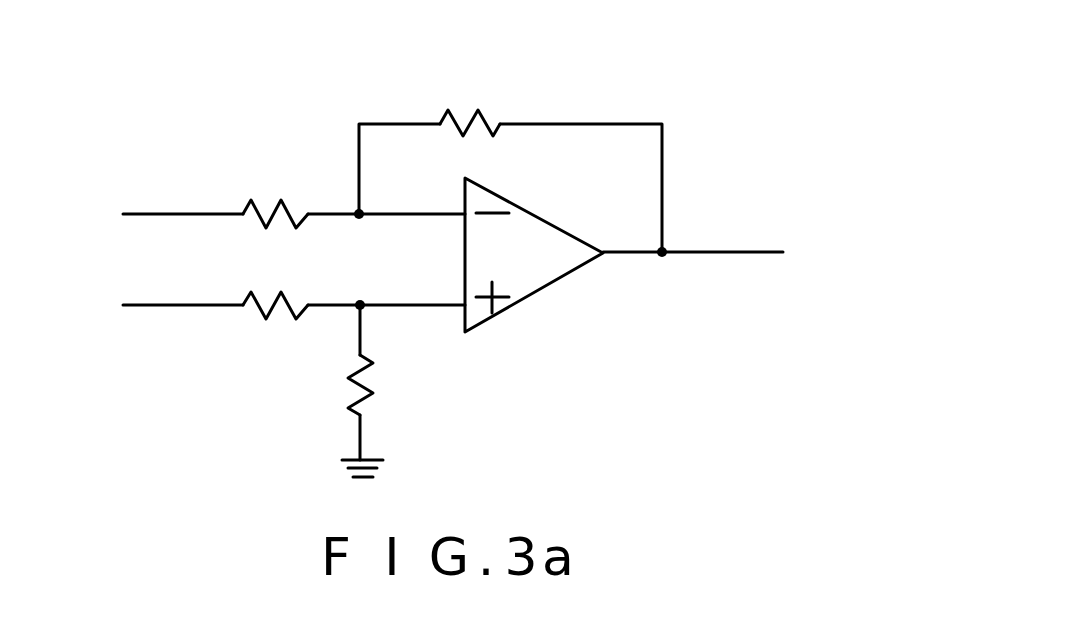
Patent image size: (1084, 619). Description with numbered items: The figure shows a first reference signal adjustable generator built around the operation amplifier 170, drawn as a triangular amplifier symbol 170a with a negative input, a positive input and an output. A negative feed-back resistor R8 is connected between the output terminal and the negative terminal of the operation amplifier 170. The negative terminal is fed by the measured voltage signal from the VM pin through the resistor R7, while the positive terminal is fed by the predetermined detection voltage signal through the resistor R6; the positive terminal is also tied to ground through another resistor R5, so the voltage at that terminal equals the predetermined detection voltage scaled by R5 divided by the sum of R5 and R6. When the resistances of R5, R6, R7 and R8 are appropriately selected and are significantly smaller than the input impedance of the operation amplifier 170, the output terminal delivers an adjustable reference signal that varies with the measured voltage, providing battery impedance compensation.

The operation amplifier 170 is at (475, 238).
The operational amplifier OP170 170a is at (550, 288).
The resistor R5 is at (386, 385).
The resistor R6 is at (275, 325).
The resistor R7 is at (275, 230).
The negative feed-back resistor R8 is at (484, 109).